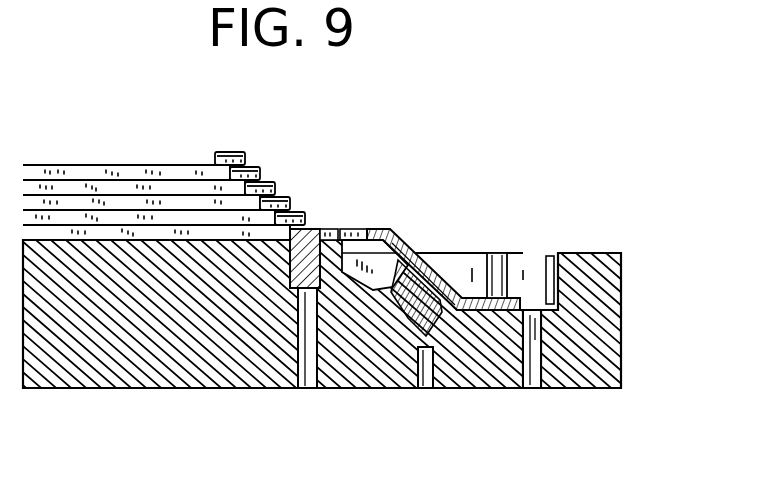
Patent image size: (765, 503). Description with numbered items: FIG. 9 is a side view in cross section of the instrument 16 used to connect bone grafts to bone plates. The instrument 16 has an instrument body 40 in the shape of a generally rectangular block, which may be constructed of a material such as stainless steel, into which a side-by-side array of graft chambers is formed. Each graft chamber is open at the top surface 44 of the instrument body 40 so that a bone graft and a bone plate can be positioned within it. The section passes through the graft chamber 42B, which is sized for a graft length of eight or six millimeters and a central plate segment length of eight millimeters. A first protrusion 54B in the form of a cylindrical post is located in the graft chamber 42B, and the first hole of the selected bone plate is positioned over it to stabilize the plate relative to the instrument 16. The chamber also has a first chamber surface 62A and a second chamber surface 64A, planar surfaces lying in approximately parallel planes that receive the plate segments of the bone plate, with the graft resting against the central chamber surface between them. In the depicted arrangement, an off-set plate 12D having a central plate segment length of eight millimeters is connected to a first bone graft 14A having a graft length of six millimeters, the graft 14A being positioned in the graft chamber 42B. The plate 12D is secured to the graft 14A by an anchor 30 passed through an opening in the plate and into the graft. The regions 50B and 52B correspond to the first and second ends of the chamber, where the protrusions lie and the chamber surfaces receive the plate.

The instrument 16 is at (164, 145).
The first chamber surface 62A is at (203, 240).
The first protrusion 54B is at (310, 244).
The thin plate 50B is at (330, 232).
The off-set plate 12D is at (383, 208).
The anchor 30 is at (443, 268).
The second graft chamber 42B is at (522, 265).
The top surface 44 is at (577, 250).
The second chamber surface 64A is at (537, 308).
The instrument body 40 is at (96, 372).
The first bone graft 14A is at (418, 343).
The channel 52B is at (497, 310).